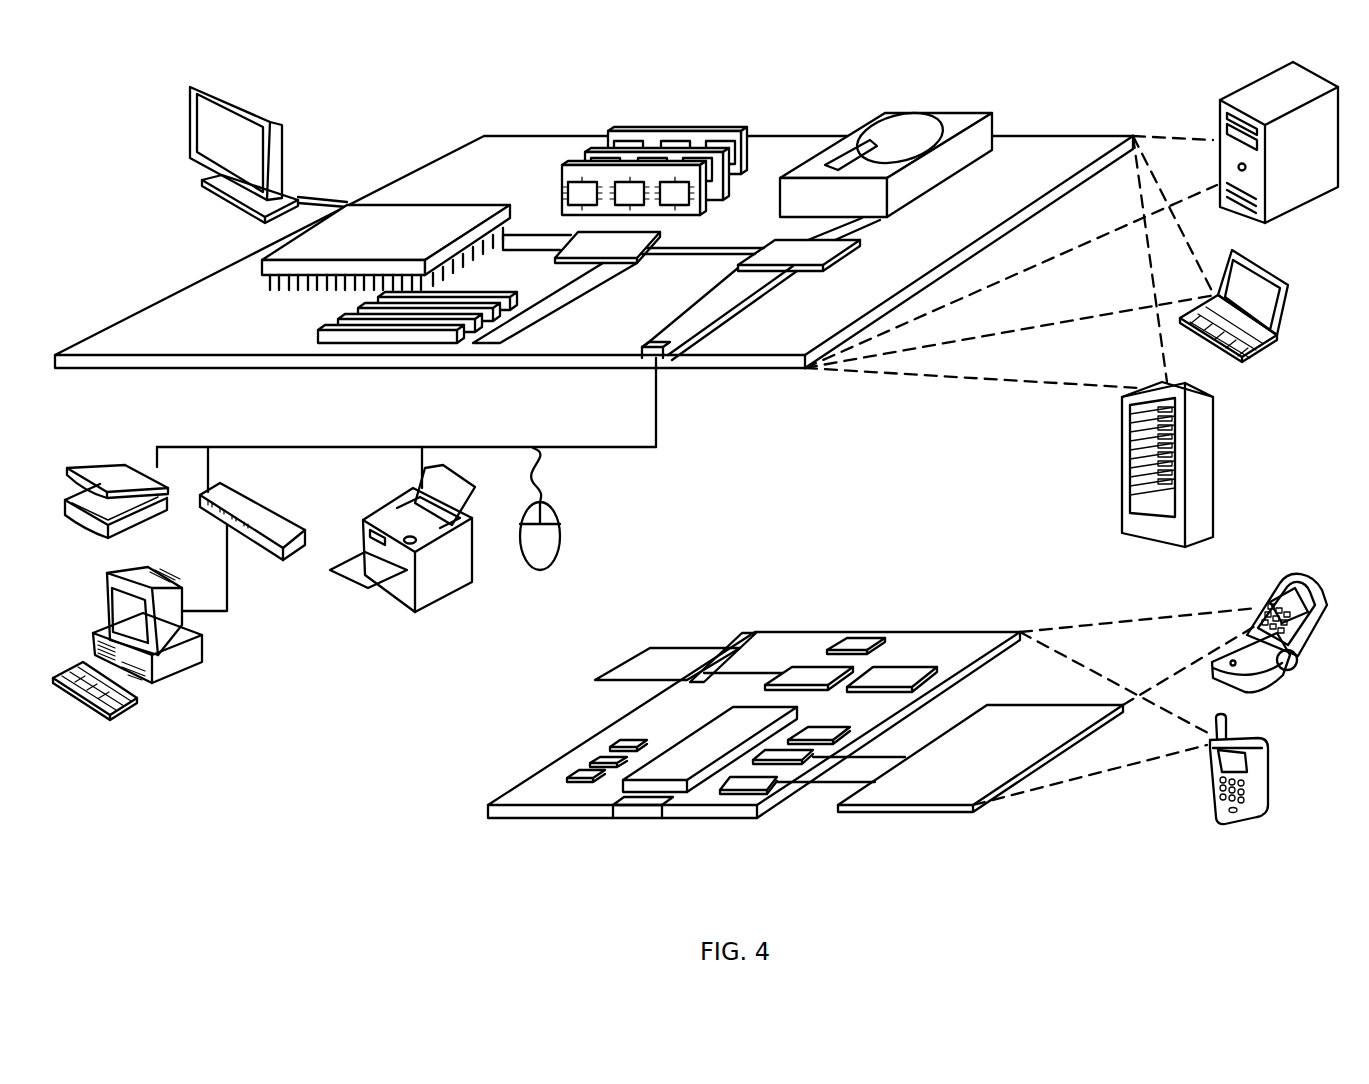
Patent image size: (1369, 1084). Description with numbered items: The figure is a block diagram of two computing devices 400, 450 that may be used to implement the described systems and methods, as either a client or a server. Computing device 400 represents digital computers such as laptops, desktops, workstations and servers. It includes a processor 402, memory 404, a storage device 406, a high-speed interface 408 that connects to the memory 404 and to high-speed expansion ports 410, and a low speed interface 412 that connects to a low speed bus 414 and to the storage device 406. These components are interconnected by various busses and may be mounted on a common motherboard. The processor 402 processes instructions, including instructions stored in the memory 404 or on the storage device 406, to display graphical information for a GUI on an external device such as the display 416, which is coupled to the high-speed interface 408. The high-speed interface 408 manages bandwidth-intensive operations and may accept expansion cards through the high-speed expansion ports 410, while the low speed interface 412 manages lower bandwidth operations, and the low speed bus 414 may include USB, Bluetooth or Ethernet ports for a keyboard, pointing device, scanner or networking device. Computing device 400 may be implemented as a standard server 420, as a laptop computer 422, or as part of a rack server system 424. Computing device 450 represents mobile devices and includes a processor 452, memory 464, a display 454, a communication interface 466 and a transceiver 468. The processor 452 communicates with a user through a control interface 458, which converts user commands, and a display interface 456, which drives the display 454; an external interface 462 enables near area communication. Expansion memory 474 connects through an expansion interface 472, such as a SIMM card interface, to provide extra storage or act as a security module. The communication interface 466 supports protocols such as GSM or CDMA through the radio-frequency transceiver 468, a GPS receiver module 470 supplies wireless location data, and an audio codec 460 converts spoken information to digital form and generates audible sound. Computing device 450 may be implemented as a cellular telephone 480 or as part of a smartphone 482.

The computing device 400 is at (402, 98).
The processor 402 is at (268, 263).
The memory 404 is at (620, 128).
The storage device 406 is at (881, 112).
The high-speed interface 408 is at (597, 246).
The high-speed expansion ports 410 is at (330, 324).
The low speed interface 412 is at (777, 247).
The low speed bus 414 is at (668, 358).
The display 416 is at (192, 84).
The standard server 420 is at (1220, 118).
The laptop computer 422 is at (1292, 283).
The rack server system 424 is at (1122, 493).
The computing device 450 is at (460, 822).
The processor 452 is at (680, 772).
The display 454 is at (938, 790).
The display interface 456 is at (753, 778).
The control interface 458 is at (792, 757).
The audio codec 460 is at (822, 733).
The external interface 462 is at (643, 808).
The memory 464 is at (590, 762).
The communication interface 466 is at (810, 673).
The transceiver 468 is at (893, 675).
The GPS receiver module 470 is at (868, 638).
The expansion interface 472 is at (733, 643).
The expansion memory 474 is at (645, 648).
The cellular telephone 480 is at (1272, 581).
The smartphone 482 is at (1210, 777).